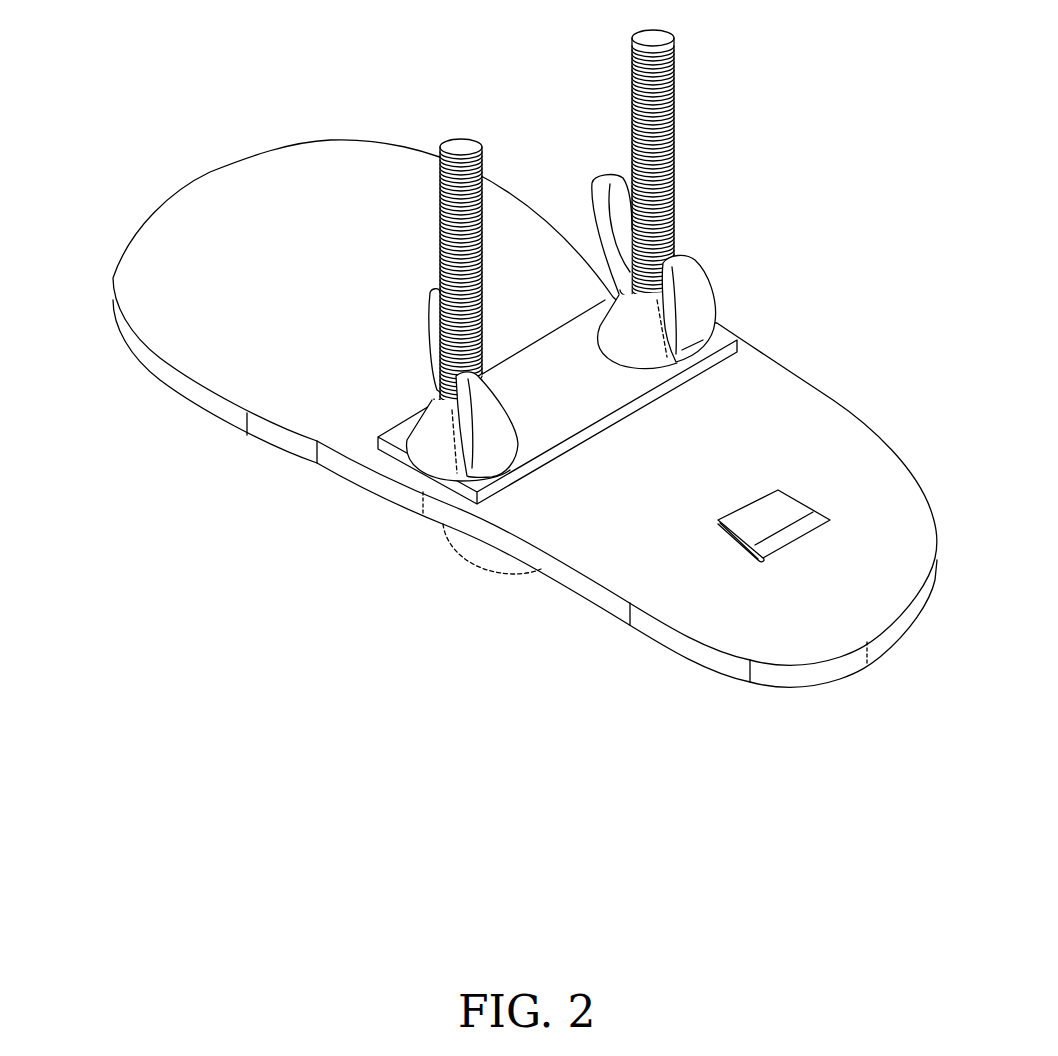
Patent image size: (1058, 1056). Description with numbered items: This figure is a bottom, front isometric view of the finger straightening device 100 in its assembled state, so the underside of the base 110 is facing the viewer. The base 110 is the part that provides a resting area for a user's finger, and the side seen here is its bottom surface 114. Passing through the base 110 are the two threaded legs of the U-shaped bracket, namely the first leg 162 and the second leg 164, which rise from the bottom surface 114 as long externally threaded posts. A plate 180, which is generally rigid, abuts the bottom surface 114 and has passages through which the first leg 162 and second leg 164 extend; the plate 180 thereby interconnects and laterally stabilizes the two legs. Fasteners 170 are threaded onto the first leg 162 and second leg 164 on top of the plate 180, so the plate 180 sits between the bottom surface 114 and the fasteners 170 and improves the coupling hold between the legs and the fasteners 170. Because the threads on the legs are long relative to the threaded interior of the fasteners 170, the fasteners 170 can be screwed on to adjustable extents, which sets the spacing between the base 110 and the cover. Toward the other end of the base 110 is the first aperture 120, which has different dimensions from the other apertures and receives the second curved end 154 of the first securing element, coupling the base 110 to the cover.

The finger straightening device 100 is at (212, 86).
The base 110 is at (165, 378).
The bottom surface 114 is at (210, 264).
The first aperture 120 is at (820, 519).
The second curved end 154 is at (753, 522).
The first leg 162 is at (455, 252).
The second leg 164 is at (676, 113).
The fasteners 170 is at (428, 450).
The plate 180 is at (610, 393).